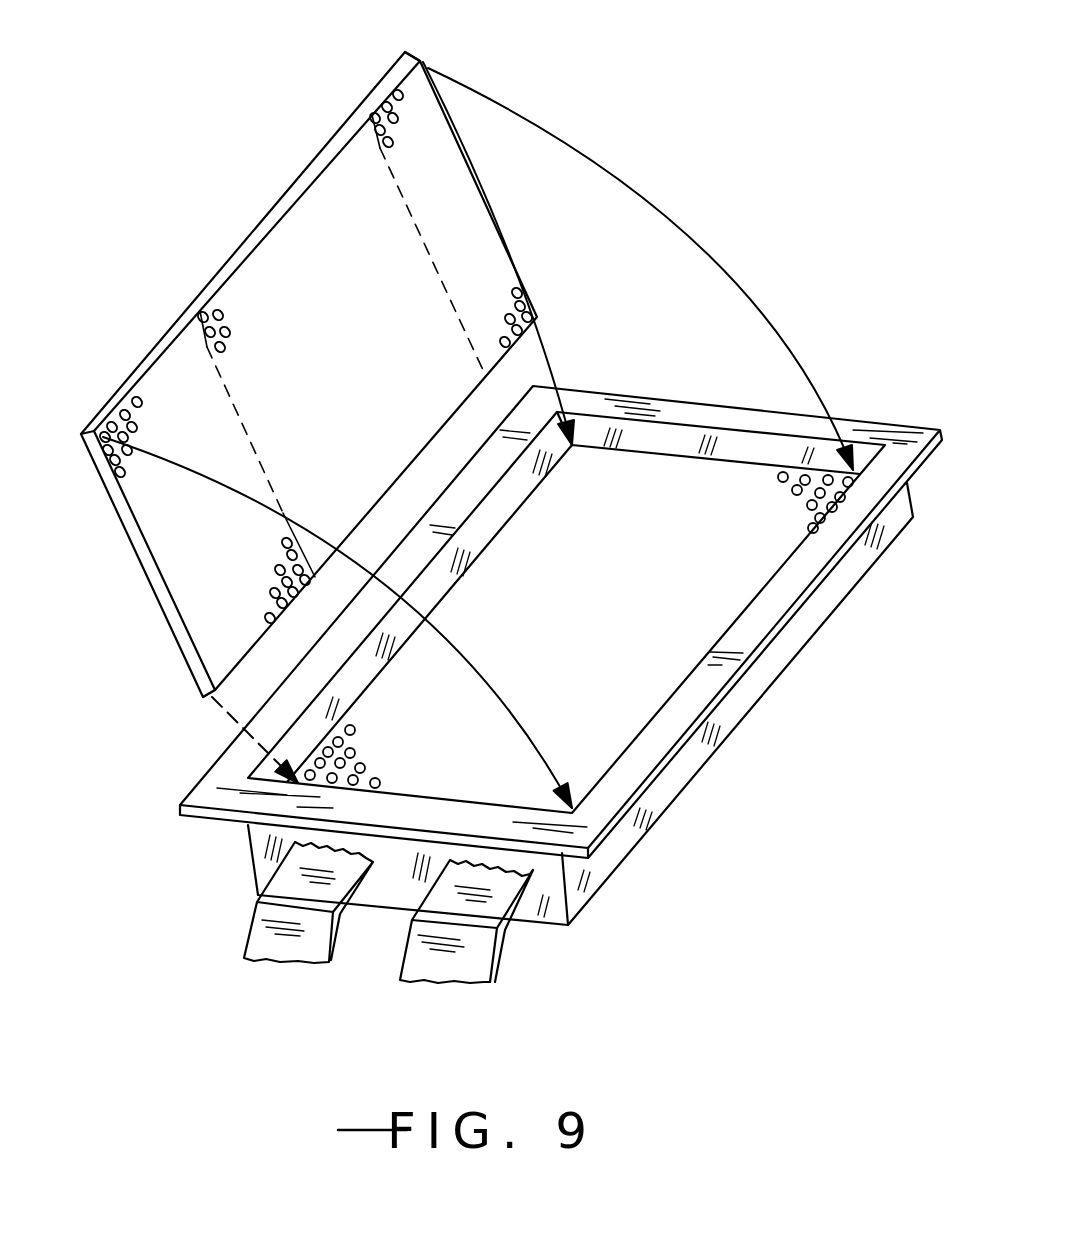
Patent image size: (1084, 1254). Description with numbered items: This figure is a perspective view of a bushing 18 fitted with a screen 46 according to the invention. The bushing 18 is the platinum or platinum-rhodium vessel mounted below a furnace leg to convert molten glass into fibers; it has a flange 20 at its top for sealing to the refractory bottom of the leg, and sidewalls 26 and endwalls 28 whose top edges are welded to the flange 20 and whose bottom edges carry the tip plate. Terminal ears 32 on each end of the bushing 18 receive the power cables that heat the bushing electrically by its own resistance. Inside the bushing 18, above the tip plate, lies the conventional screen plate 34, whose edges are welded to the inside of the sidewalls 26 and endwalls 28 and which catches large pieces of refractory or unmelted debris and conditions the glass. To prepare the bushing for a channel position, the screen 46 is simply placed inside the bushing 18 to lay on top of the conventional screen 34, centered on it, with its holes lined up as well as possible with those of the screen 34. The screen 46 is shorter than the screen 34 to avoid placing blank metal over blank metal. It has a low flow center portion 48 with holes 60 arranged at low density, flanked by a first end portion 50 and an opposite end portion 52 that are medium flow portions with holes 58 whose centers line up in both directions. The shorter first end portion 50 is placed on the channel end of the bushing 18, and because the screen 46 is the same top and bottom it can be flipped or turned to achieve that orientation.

The bushing 18 is at (518, 682).
The flange 20 is at (210, 792).
The sidewall 26 is at (600, 865).
The endwall 28 is at (398, 885).
The terminal ear 32 is at (270, 930).
The screen plate 34 is at (692, 627).
The screen 46 is at (325, 355).
The low flow center portion 48 is at (287, 232).
The first end portion 50 is at (415, 118).
The opposite end portion 52 is at (175, 370).
The holes 58 is at (110, 400).
The holes 60 is at (217, 323).